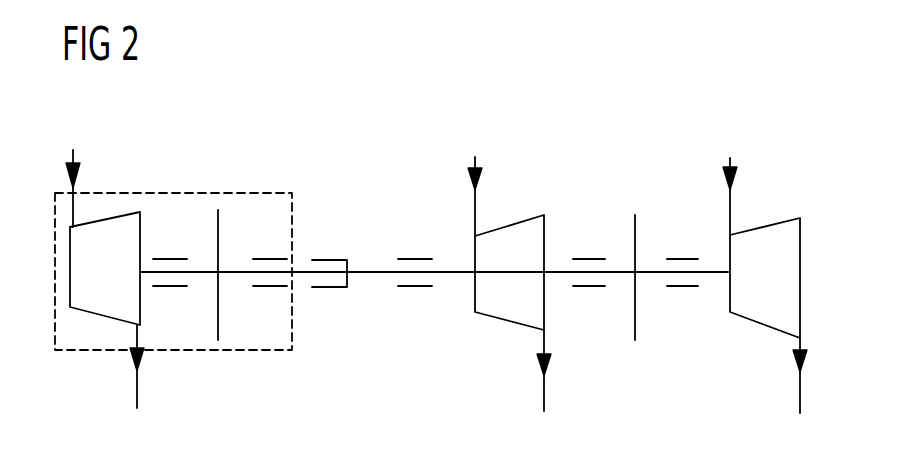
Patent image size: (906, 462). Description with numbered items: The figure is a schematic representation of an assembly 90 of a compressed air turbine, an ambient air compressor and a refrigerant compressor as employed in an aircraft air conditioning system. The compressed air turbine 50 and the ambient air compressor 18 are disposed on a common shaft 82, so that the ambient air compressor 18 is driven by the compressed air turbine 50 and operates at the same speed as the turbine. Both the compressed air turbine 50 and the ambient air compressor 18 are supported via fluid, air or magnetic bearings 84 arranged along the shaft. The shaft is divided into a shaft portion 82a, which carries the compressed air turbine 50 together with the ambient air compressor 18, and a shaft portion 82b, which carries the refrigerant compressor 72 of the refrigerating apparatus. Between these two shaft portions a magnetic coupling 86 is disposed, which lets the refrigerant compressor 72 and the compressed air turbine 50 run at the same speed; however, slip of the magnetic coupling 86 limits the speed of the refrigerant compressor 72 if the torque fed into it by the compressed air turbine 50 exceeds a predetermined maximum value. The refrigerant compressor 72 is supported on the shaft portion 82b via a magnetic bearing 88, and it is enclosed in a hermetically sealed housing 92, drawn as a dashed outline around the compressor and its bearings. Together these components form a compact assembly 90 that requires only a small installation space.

The assembly 90 is at (746, 102).
The refrigerant compressor 72 is at (109, 219).
The magnetic bearing 88 is at (163, 244).
The hermetically sealed housing 92 is at (240, 352).
The common shaft 82 is at (379, 256).
The shaft portion 82a is at (455, 275).
The shaft portion 82b is at (200, 276).
The magnetic coupling 86 is at (331, 243).
The bearings 84 is at (411, 305).
The ambient air compressor 18 is at (509, 226).
The compressed air turbine 50 is at (763, 229).